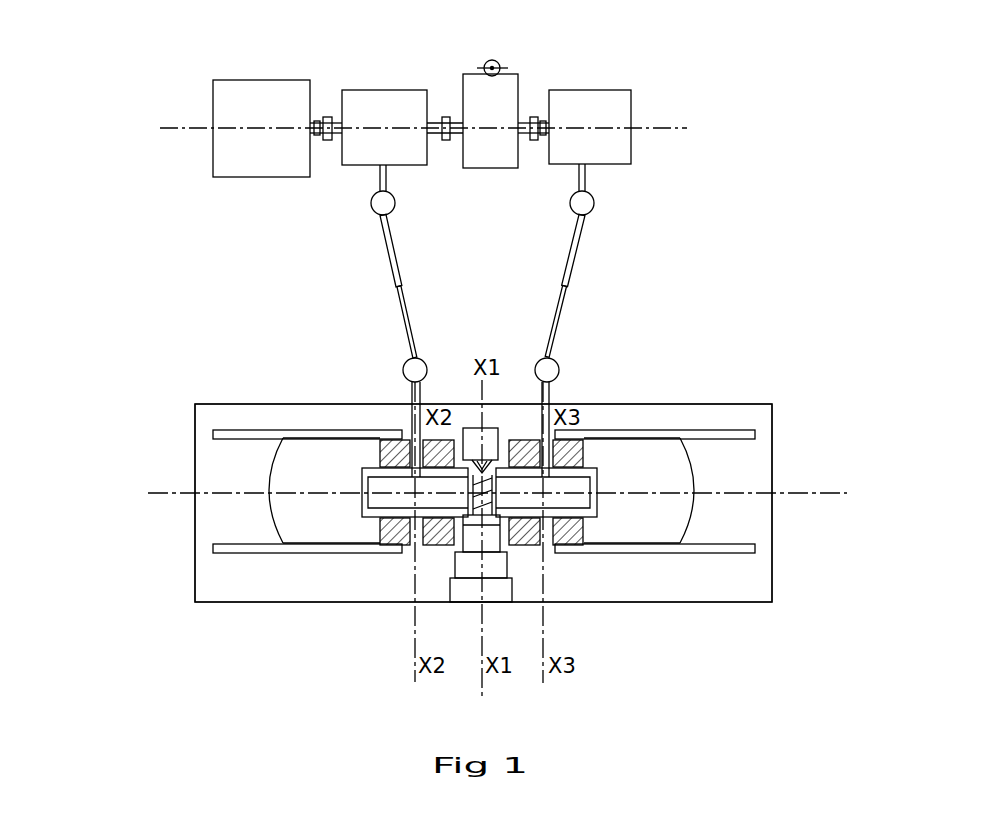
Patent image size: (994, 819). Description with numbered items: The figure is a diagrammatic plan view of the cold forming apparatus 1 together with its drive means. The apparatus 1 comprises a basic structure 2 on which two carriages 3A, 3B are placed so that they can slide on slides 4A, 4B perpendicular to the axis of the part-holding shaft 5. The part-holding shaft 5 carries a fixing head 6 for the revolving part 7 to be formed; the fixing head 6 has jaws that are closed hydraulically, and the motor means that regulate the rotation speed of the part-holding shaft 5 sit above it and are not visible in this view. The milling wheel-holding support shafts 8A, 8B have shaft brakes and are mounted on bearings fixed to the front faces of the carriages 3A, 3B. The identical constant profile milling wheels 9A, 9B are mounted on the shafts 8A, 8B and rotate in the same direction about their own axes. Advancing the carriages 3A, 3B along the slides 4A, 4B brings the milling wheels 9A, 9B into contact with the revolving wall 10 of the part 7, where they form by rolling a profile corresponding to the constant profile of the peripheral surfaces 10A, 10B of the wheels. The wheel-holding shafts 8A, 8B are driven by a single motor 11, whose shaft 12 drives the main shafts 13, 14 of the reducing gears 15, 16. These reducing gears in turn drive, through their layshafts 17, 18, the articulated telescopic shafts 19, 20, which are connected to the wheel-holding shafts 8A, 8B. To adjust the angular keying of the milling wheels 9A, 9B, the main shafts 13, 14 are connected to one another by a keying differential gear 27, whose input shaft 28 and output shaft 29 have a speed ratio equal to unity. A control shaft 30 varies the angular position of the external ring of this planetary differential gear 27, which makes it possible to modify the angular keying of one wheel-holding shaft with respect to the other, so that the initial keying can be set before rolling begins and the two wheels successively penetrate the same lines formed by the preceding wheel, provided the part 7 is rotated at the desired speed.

The apparatus 1 is at (742, 349).
The basic structure 2 is at (650, 413).
The carriage 3A is at (317, 462).
The carriage 3B is at (657, 457).
The slide 4A is at (240, 547).
The slide 4B is at (733, 547).
The part-holding shaft 5 is at (490, 542).
The fixing head 6 is at (437, 543).
The revolving part 7 is at (395, 520).
The milling wheel-holding support shaft 8A is at (410, 412).
The milling wheel-holding support shaft 8B is at (556, 394).
The milling wheel 9A is at (385, 495).
The milling wheel 9B is at (577, 476).
The revolving wall 10 is at (500, 428).
The peripheral surface 10A is at (383, 447).
The peripheral surface 10B is at (578, 550).
The motor 11 is at (257, 103).
The motor shaft 12 is at (319, 111).
The main shaft 13 is at (337, 111).
The main shaft 14 is at (542, 112).
The reducing gear 15 is at (385, 107).
The reducing gear 16 is at (593, 108).
The layshaft 17 is at (373, 180).
The layshaft 18 is at (589, 182).
The articulated telescopic shaft 19 is at (379, 288).
The articulated telescopic shaft 20 is at (581, 288).
The keying differential gear 27 is at (490, 150).
The input shaft 28 is at (449, 145).
The output shaft 29 is at (524, 144).
The control shaft 30 is at (496, 61).